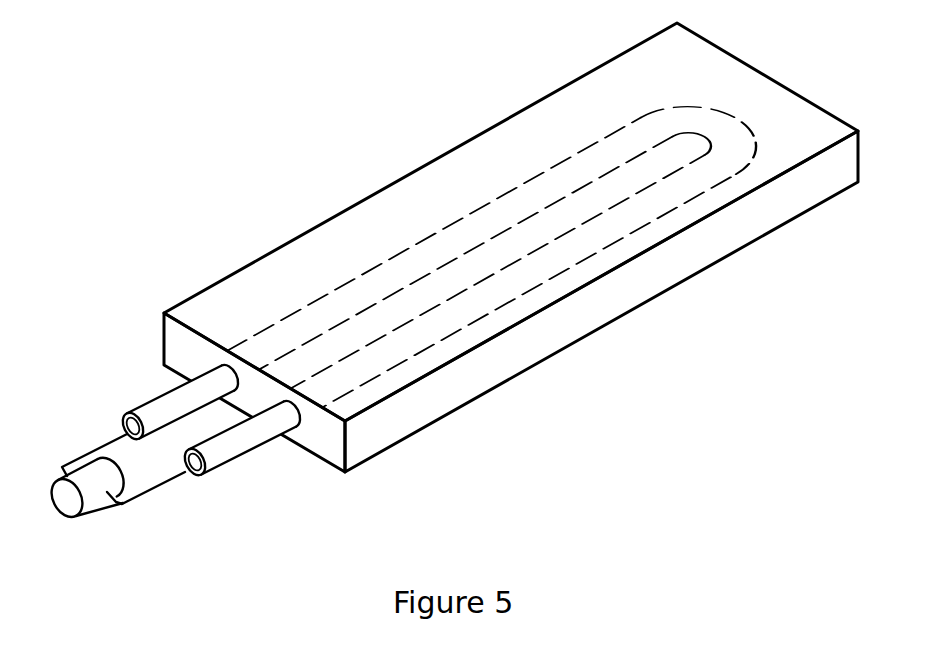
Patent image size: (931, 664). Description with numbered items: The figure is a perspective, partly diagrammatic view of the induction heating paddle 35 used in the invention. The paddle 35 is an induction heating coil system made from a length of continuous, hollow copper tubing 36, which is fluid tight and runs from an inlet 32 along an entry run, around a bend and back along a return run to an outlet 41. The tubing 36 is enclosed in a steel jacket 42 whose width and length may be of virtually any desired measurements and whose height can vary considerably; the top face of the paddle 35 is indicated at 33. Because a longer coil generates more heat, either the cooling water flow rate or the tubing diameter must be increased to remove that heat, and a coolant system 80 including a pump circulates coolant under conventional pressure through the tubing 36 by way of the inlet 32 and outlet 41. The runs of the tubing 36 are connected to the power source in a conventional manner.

The inlet 32 is at (157, 407).
The top face of the paddle 33 is at (637, 80).
The paddle 35 is at (511, 236).
The copper tubing 36 is at (505, 231).
The outlet 41 is at (227, 450).
The steel jacket 42 is at (703, 245).
The coolant system 80 is at (77, 526).